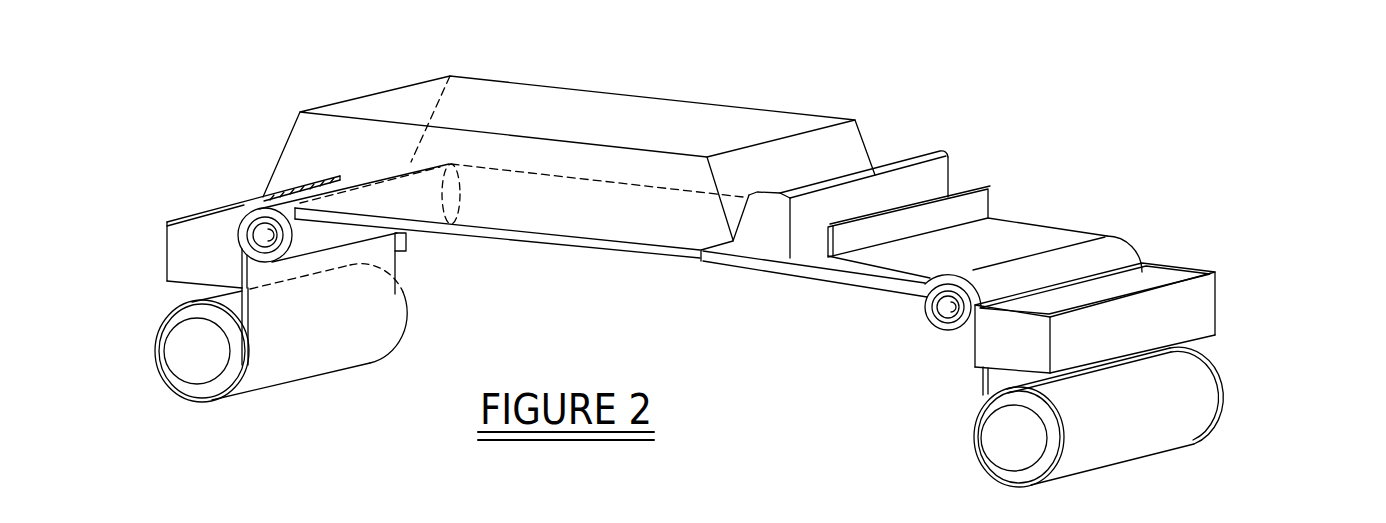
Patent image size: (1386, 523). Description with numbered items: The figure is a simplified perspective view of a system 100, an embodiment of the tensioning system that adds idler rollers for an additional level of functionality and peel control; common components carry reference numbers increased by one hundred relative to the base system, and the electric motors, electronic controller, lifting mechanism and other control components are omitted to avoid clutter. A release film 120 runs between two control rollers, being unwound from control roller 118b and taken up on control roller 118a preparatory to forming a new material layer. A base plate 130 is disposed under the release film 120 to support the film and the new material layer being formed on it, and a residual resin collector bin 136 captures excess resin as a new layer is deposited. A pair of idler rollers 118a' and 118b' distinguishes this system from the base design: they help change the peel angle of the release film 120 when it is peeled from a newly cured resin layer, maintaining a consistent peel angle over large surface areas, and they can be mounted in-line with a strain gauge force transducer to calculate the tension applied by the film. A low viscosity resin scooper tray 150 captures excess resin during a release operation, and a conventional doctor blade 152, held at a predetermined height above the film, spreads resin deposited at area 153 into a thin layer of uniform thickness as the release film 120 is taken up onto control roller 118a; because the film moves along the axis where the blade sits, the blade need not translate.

The system 100 is at (676, 271).
The release film 120 is at (681, 112).
The base plate 130 is at (527, 246).
The residual resin collector bin 136 is at (203, 209).
The low viscosity resin scooper tray 150 is at (893, 188).
The doctor blade 152 is at (980, 203).
The area 153 is at (1038, 237).
The control roller 118a is at (241, 317).
The idler roller 118a' is at (268, 220).
The control roller 118b is at (1054, 375).
The idler roller 118b' is at (899, 307).